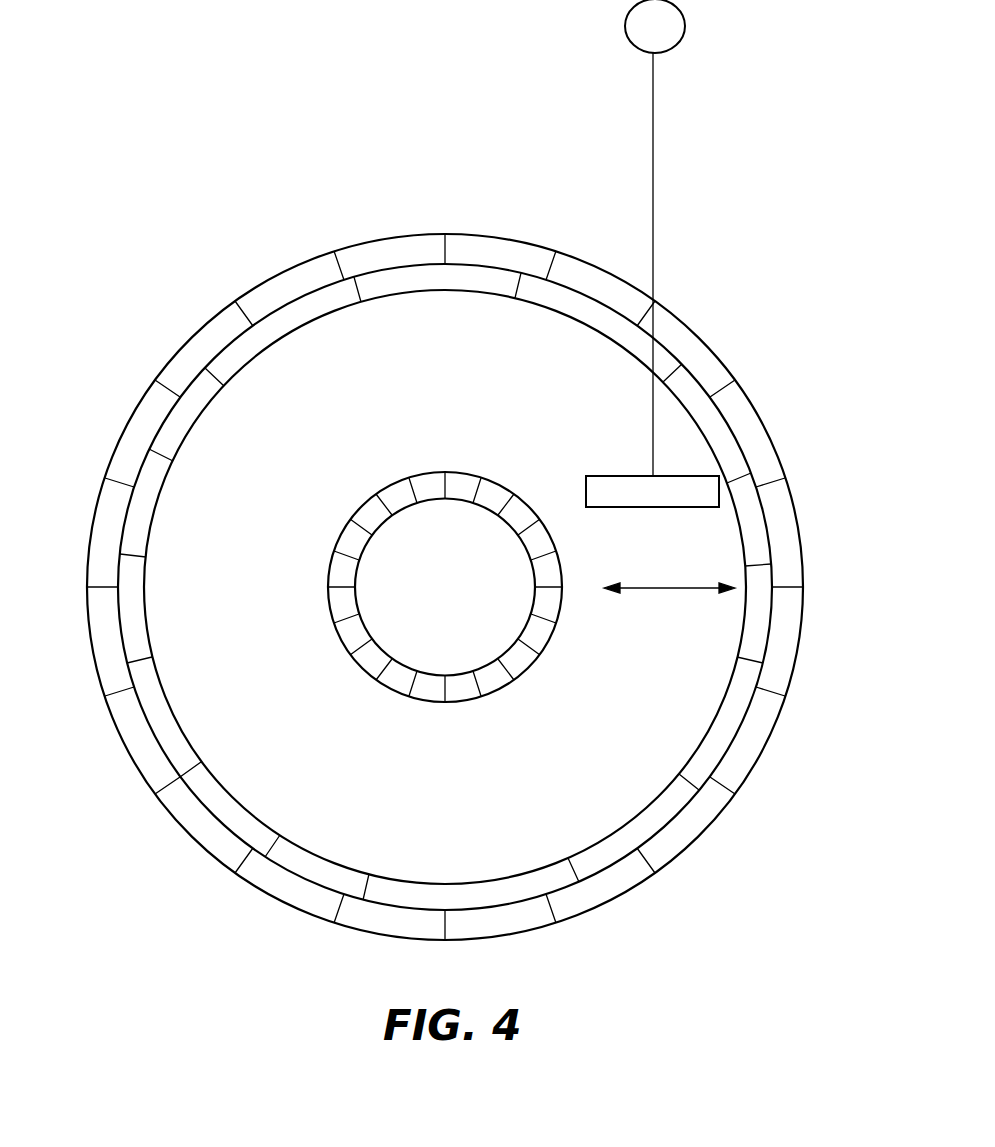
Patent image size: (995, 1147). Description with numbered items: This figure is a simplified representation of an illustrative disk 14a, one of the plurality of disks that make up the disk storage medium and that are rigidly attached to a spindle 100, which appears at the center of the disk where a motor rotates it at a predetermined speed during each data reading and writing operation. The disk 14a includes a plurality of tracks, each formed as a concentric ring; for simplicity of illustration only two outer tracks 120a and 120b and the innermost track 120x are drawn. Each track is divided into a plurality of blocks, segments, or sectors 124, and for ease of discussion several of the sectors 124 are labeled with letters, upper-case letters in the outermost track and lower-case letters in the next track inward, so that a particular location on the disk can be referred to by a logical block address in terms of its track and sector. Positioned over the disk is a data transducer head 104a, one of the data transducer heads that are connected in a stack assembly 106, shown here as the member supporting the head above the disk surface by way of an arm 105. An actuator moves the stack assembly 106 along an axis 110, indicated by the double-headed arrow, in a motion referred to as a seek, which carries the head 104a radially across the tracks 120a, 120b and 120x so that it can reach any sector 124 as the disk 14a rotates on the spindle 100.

The disk 14a is at (183, 833).
The outer track 120a is at (188, 346).
The outer track 120b is at (303, 320).
The innermost track 120x is at (427, 472).
The sector 124 is at (572, 247).
The spindle 100 is at (482, 647).
The data transducer head 104a is at (615, 476).
The actuator arm 105 is at (654, 207).
The stack assembly 106 is at (686, 27).
The axis 110 is at (675, 587).